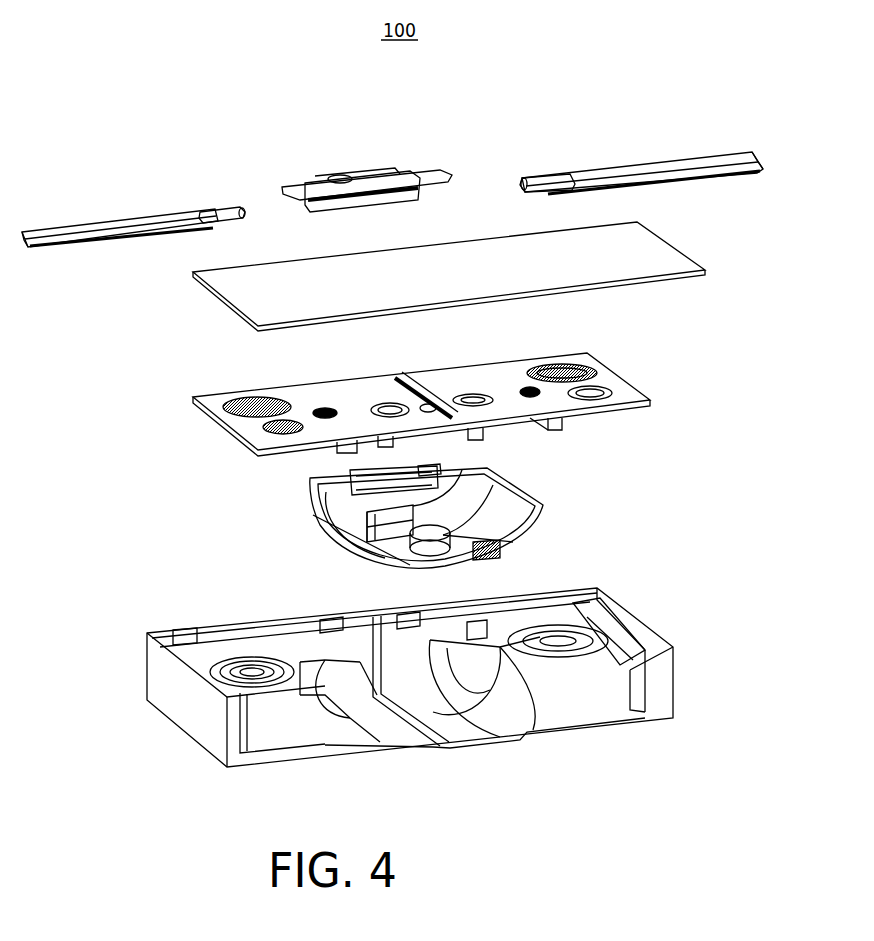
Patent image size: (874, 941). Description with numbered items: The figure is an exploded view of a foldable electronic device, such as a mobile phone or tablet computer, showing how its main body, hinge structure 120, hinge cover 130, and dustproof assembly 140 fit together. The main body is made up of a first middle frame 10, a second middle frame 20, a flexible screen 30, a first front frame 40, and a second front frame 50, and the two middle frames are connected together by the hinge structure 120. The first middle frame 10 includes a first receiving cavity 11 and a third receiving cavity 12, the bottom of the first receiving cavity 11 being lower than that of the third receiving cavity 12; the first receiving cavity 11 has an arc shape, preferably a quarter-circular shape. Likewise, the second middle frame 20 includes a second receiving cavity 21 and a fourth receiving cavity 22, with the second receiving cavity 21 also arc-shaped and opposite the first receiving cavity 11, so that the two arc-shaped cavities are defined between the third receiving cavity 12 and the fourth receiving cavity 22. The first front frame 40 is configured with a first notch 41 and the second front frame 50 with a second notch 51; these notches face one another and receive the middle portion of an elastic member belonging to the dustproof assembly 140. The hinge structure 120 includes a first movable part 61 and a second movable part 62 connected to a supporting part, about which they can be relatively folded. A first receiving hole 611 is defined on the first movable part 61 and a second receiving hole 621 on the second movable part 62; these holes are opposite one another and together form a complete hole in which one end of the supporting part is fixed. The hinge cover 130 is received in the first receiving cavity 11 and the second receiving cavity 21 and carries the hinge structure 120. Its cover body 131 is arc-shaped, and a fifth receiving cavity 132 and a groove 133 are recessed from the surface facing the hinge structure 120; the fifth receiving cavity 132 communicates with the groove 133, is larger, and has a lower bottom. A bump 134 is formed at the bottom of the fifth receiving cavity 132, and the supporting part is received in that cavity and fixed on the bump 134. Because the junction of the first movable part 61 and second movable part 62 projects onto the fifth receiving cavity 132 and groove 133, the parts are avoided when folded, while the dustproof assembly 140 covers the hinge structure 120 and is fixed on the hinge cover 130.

The first middle frame 10 is at (381, 706).
The first receiving cavity 11 is at (387, 727).
The third receiving cavity 12 is at (296, 684).
The second middle frame 20 is at (594, 693).
The second receiving cavity 21 is at (461, 724).
The fourth receiving cavity 22 is at (550, 670).
The flexible screen 30 is at (567, 262).
The first front frame 40 is at (120, 222).
The first notch 41 is at (205, 212).
The second front frame 50 is at (670, 165).
The second notch 51 is at (555, 180).
The first movable part 61 is at (247, 422).
The second movable part 62 is at (512, 383).
The first receiving hole 611 is at (420, 407).
The second receiving hole 621 is at (437, 400).
The hinge structure 120 is at (359, 394).
The hinge cover 130 is at (413, 520).
The cover body 131 is at (405, 478).
The fifth receiving cavity 132 is at (505, 520).
The groove 133 is at (442, 468).
The bump 134 is at (473, 548).
The dustproof assembly 140 is at (350, 178).